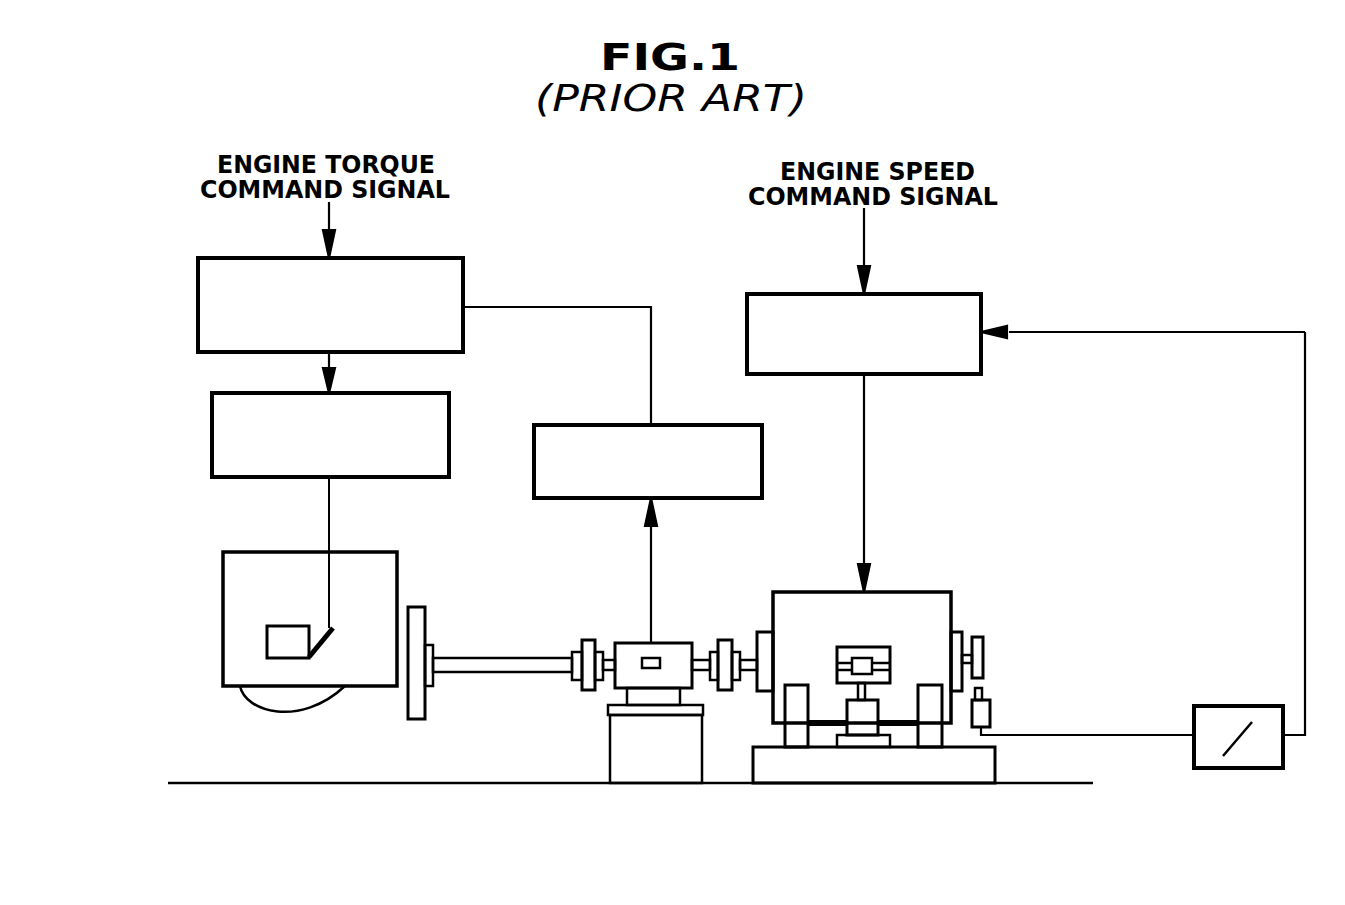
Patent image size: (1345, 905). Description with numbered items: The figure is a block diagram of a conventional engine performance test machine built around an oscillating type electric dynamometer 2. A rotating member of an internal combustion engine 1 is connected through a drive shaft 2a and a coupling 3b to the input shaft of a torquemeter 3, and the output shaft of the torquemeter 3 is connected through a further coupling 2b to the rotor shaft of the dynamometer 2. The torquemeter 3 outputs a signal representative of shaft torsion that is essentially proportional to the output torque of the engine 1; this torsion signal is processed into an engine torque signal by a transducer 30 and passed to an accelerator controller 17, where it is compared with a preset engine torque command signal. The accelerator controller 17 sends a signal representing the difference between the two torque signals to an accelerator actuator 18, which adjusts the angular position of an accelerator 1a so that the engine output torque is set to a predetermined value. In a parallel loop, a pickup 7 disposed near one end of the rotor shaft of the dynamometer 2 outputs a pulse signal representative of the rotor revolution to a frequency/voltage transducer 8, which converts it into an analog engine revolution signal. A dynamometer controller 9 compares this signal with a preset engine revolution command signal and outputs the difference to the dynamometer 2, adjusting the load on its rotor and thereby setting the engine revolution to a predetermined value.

The internal combustion engine 1 is at (372, 552).
The accelerator 1a is at (330, 640).
The oscillating type electric dynamometer 2 is at (910, 592).
The drive shaft 2a is at (477, 658).
The coupling 2b is at (723, 640).
The torquemeter 3 is at (668, 643).
The coupling 3b is at (587, 640).
The pickup 7 is at (990, 708).
The frequency/voltage transducer 8 is at (1238, 706).
The dynamometer controller 9 is at (943, 294).
The accelerator controller 17 is at (463, 266).
The accelerator actuator 18 is at (449, 418).
The transducer 30 is at (762, 453).